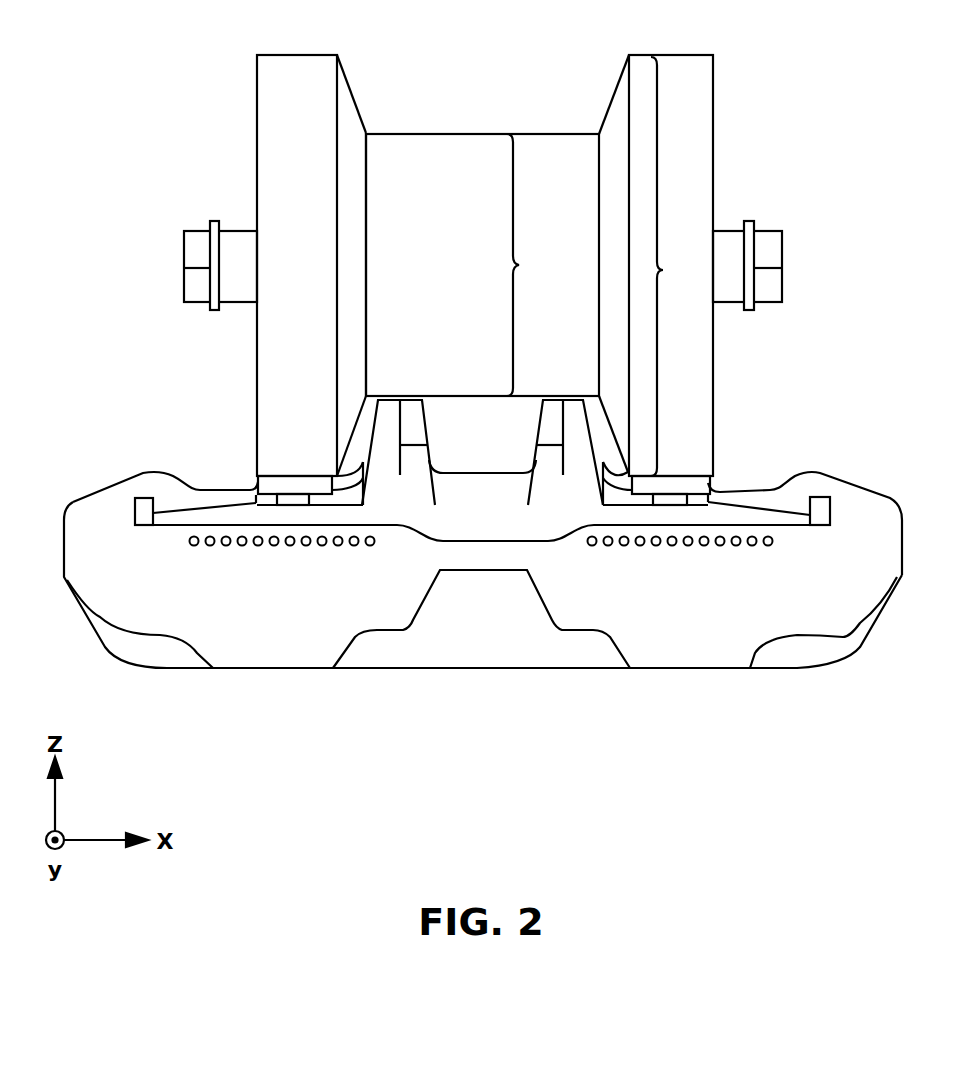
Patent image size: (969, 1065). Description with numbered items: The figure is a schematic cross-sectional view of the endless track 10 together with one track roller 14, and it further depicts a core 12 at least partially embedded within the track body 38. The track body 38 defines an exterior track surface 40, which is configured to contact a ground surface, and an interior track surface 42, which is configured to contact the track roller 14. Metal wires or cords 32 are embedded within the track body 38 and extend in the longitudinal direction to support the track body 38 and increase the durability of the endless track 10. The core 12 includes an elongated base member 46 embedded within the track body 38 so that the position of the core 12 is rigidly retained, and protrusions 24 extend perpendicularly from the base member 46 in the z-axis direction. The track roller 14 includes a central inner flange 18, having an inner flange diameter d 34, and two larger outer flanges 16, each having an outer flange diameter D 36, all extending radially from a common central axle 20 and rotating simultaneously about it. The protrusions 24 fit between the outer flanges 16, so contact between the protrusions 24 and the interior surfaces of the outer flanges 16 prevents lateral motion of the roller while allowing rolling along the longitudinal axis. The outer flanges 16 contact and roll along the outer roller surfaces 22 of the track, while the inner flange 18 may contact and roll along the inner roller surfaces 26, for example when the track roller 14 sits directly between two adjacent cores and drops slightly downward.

The endless track 10 is at (113, 483).
The core 12 is at (467, 527).
The track roller 14 is at (443, 93).
The outer flange 16 is at (298, 55).
The inner flange 18 is at (414, 285).
The central axle 20 is at (240, 231).
The outer roller surface 22 is at (262, 476).
The protrusion 24 is at (538, 423).
The inner roller surface 26 is at (388, 400).
The metal wires or cords 32 is at (305, 547).
The inner flange diameter d 34 is at (512, 213).
The outer flange diameter D 36 is at (657, 205).
The track body 38 is at (668, 615).
The exterior track surface 40 is at (693, 668).
The interior track surface 42 is at (785, 473).
The base member 46 is at (787, 522).